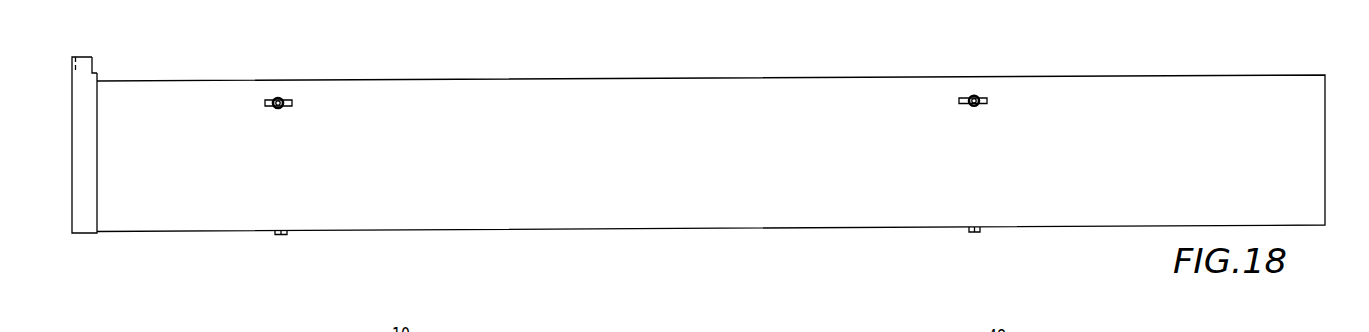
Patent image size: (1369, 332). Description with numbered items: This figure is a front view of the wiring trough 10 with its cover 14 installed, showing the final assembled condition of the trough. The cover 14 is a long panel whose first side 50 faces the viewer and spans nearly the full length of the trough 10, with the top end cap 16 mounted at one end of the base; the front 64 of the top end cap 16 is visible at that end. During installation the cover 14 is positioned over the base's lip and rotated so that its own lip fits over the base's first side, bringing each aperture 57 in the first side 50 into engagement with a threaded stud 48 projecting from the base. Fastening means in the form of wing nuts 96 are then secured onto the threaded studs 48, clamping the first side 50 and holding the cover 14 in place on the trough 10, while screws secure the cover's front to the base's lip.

The wiring trough 10 is at (698, 170).
The cover 14 is at (711, 175).
The top end cap 16 is at (88, 157).
The threaded stud 48 is at (266, 103).
The first side 50 is at (746, 148).
The aperture 57 is at (282, 110).
The front 64 is at (93, 72).
The wing nut 96 is at (293, 103).